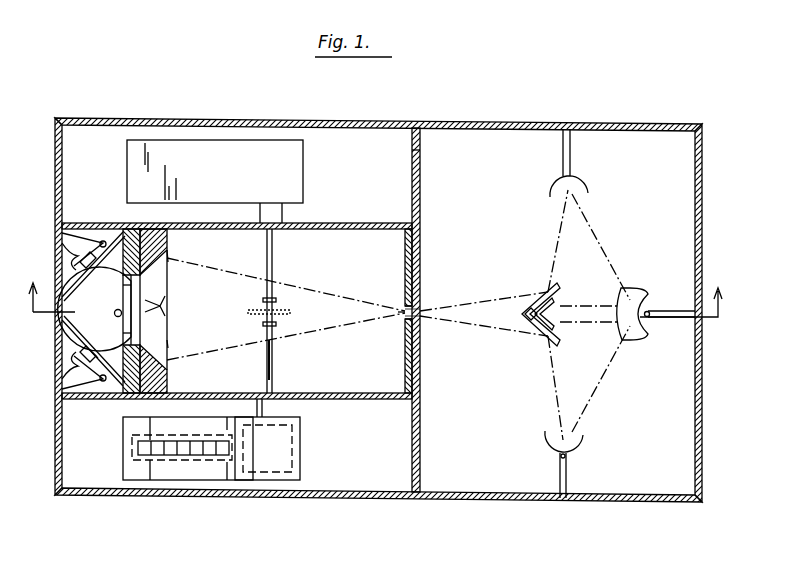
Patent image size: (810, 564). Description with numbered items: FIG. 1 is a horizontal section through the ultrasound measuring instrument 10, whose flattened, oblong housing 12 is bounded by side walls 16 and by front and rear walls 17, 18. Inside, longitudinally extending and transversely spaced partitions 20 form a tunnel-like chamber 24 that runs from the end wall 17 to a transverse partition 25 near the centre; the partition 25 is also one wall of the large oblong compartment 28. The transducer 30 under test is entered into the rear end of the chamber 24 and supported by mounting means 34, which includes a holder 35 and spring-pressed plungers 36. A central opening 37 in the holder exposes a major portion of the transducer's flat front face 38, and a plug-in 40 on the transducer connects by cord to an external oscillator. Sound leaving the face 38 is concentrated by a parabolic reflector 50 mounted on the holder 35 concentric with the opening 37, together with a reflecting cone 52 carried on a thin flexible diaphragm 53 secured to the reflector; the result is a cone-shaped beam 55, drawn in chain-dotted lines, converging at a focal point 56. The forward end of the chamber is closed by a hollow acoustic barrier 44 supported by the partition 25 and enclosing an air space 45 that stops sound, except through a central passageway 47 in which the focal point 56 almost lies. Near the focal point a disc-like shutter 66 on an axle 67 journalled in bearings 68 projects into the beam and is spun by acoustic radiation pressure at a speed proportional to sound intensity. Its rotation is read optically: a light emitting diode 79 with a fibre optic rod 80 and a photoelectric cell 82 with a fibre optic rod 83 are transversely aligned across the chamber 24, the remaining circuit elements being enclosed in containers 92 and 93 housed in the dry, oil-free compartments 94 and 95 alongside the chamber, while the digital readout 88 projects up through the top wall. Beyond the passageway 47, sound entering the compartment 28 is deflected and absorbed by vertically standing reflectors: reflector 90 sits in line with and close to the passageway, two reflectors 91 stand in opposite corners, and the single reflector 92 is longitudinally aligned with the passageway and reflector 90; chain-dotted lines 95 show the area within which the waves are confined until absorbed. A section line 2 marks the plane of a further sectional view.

The ultrasound measuring instrument 10 is at (373, 274).
The housing 12 is at (237, 92).
The side walls 16 is at (516, 128).
The front wall 17 is at (55, 445).
The rear wall 18 is at (702, 472).
The partitions 20 is at (393, 226).
The tunnel-like chamber 24 is at (286, 295).
The transverse partition 25 is at (412, 162).
The compartment 28 is at (536, 293).
The transducer 30 is at (104, 378).
The mounting means 34 is at (60, 336).
The holder 35 is at (130, 238).
The spring-pressed plungers 36 is at (62, 238).
The central opening 37 is at (129, 292).
The front face 38 is at (129, 330).
The plug-in 40 is at (94, 309).
The acoustic barrier 44 is at (414, 256).
The air space 45 is at (414, 290).
The passageway 47 is at (414, 320).
The parabolic reflector 50 is at (168, 262).
The reflecting cone 52 is at (170, 300).
The diaphragm 53 is at (168, 346).
The cone-shaped sound beam 55 is at (310, 334).
The focal point 56 is at (400, 318).
The shutter 66 is at (248, 312).
The axle 67 is at (276, 304).
The bearings 68 is at (264, 300).
The light emitting diode 79 is at (284, 216).
The fibre optic rod 80 is at (273, 252).
The photoelectric cell 82 is at (270, 412).
The fibre optic rod 83 is at (274, 362).
The digital readout 88 is at (200, 458).
The sound reflector 90 is at (558, 338).
The sound reflectors 91 is at (584, 184).
The container 92 is at (305, 160).
The container 93 is at (236, 470).
The compartment 94 is at (386, 220).
The compartment 95 is at (606, 240).
The section line 2- 2 is at (374, 289).